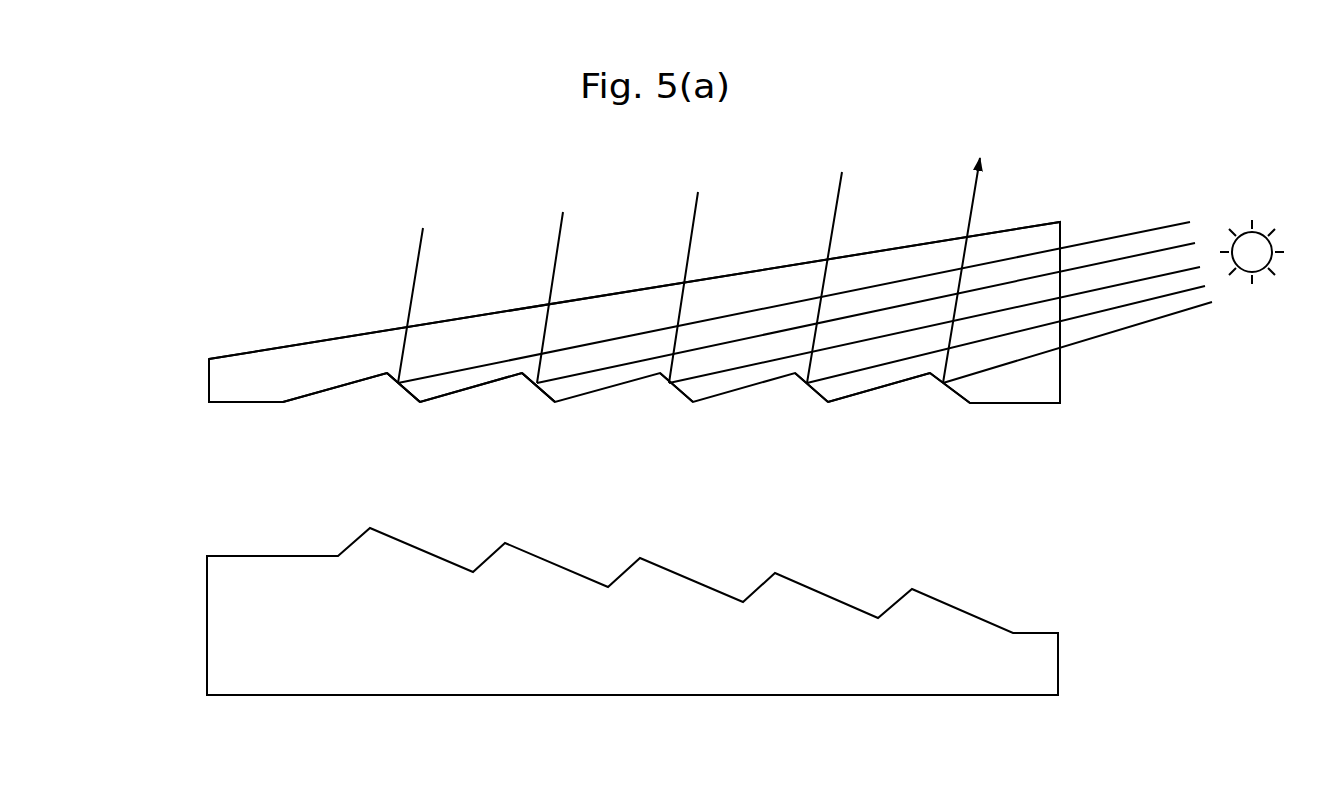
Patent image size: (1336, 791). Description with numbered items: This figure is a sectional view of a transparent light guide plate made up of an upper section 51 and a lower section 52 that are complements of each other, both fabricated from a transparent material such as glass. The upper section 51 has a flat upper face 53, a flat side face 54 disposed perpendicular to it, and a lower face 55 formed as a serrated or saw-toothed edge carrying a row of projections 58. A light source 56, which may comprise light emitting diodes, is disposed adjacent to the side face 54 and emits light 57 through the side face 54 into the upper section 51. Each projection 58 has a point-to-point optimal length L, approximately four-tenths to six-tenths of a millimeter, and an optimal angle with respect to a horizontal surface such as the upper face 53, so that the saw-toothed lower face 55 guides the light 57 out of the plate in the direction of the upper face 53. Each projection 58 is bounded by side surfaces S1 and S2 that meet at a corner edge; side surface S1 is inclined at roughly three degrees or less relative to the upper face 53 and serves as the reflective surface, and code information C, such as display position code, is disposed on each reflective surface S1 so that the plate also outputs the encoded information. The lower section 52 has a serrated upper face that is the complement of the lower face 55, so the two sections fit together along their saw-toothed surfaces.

The upper section 51 is at (193, 379).
The lower section 52 is at (1000, 654).
The upper face 53 is at (272, 345).
The side face 54 is at (1068, 386).
The lower face 55 is at (1023, 423).
The light source 56 is at (1262, 235).
The light 57 is at (1133, 233).
The projection 58 is at (853, 398).
The side surface S1 is at (518, 379).
The side surface S2 is at (453, 399).
The code information C is at (402, 393).
The optimal length L is at (553, 413).